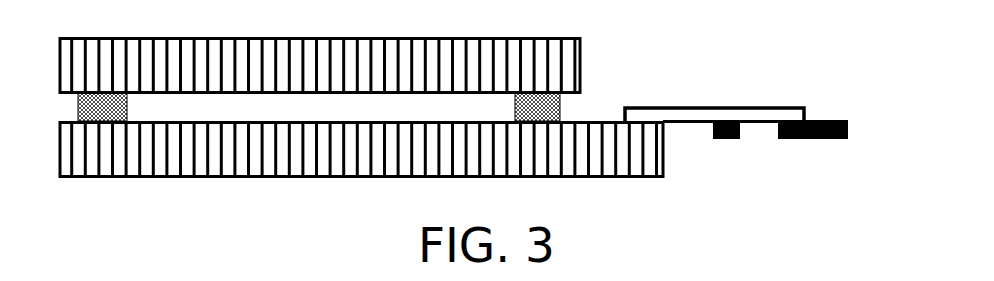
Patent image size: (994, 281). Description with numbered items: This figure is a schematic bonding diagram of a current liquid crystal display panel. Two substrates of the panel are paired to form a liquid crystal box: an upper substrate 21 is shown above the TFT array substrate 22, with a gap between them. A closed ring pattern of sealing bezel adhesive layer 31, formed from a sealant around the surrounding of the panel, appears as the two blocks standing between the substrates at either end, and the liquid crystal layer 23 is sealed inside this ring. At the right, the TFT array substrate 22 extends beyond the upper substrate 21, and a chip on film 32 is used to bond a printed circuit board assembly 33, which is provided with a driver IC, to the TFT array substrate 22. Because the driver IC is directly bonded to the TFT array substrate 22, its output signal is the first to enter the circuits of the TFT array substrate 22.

The first substrate 21 is at (583, 64).
The TFT array substrate 22 is at (665, 145).
The liquid crystal layer 23 is at (328, 106).
The sealing bezel adhesive layer 31 is at (552, 106).
The chip on film 32 is at (695, 103).
The printed circuit board assembly 33 is at (803, 138).